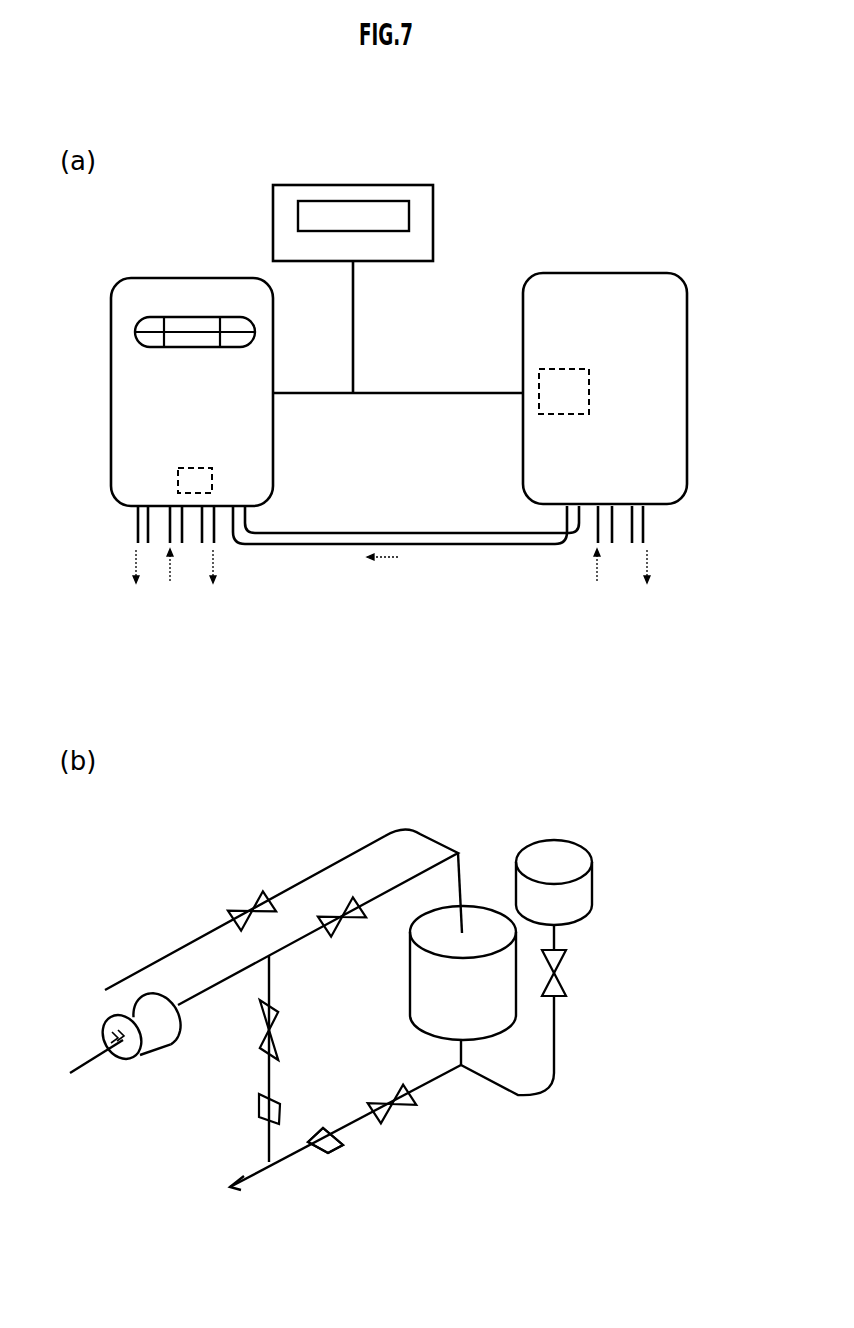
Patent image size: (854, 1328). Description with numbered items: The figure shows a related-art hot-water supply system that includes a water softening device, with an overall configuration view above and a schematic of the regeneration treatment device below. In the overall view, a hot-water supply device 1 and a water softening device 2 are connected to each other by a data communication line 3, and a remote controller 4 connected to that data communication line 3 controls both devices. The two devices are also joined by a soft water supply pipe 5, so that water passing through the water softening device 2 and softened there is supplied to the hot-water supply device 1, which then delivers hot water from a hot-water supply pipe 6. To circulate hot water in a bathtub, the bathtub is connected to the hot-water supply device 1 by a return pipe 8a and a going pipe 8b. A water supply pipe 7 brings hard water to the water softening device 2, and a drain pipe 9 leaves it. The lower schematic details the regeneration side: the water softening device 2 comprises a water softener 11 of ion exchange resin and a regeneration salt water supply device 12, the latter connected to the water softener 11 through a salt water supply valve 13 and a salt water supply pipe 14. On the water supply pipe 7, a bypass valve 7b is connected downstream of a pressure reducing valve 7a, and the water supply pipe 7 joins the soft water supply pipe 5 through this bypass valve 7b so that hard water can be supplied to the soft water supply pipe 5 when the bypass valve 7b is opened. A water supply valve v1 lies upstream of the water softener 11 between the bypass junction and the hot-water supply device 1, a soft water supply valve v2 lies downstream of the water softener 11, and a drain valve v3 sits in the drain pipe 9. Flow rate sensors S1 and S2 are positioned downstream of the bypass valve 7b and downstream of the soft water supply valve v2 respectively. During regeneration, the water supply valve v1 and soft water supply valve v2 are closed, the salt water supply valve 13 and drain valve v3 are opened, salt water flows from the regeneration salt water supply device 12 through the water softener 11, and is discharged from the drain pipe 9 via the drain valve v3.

The hot-water supply device 1 is at (110, 421).
The water softening device 2 is at (677, 315).
The data communication line 3 is at (405, 389).
The remote controller 4 is at (425, 198).
The soft water supply pipe 5 is at (462, 545).
The hot-water supply pipe 6 is at (140, 532).
The water supply pipe 7 is at (607, 540).
The pressure reducing valve 7a is at (160, 1040).
The bypass valve 7b is at (264, 1042).
The return pipe 8a is at (176, 541).
The going pipe 8b is at (212, 540).
The drain pipe 9 is at (638, 530).
The water softener 11 is at (408, 987).
The regeneration salt water supply device 12 is at (580, 853).
The salt water supply valve 13 is at (567, 952).
The salt water supply pipe 14 is at (557, 1042).
The water supply valve v1 is at (357, 905).
The soft water supply valve v2 is at (383, 1122).
The drain valve v3 is at (263, 902).
The flow rate sensor S1 is at (262, 1103).
The flow rate sensor S2 is at (323, 1147).